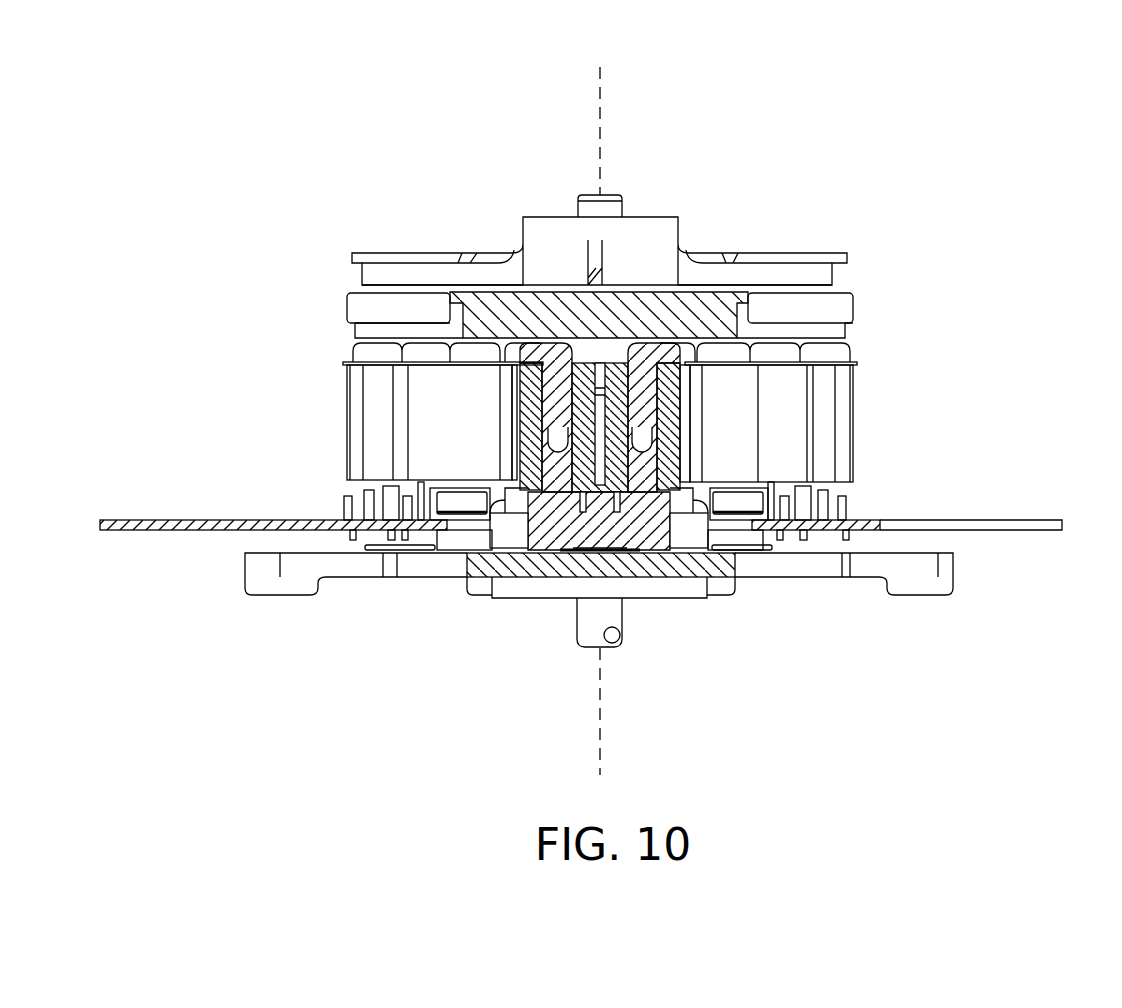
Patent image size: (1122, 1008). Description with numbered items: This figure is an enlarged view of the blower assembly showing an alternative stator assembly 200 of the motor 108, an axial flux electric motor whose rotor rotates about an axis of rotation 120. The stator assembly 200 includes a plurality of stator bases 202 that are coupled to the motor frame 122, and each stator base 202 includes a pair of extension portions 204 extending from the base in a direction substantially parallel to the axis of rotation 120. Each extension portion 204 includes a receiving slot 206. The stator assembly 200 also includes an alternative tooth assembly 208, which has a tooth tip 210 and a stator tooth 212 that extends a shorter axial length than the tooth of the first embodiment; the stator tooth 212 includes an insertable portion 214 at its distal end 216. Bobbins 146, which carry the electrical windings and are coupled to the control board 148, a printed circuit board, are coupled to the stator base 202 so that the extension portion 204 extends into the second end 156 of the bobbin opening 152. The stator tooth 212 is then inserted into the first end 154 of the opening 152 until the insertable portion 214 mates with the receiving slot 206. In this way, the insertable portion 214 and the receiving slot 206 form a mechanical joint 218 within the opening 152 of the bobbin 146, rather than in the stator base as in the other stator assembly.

The motor 108 is at (906, 172).
The axis of rotation 120 is at (602, 127).
The motor frame 122 is at (890, 562).
The bobbin 146 is at (673, 447).
The control board 148 is at (873, 518).
The opening 152 is at (695, 405).
The first end 154 is at (675, 372).
The second end 156 is at (522, 472).
The stator assembly 200 is at (872, 340).
The stator base 202 is at (603, 532).
The extension portion 204 is at (640, 480).
The receiving slot 206 is at (690, 553).
The tooth assembly 208 is at (522, 387).
The tooth tip 210 is at (522, 353).
The stator tooth 212 is at (558, 408).
The insertable portion 214 is at (553, 440).
The distal end 216 is at (645, 438).
The mechanical joint 218 is at (555, 470).